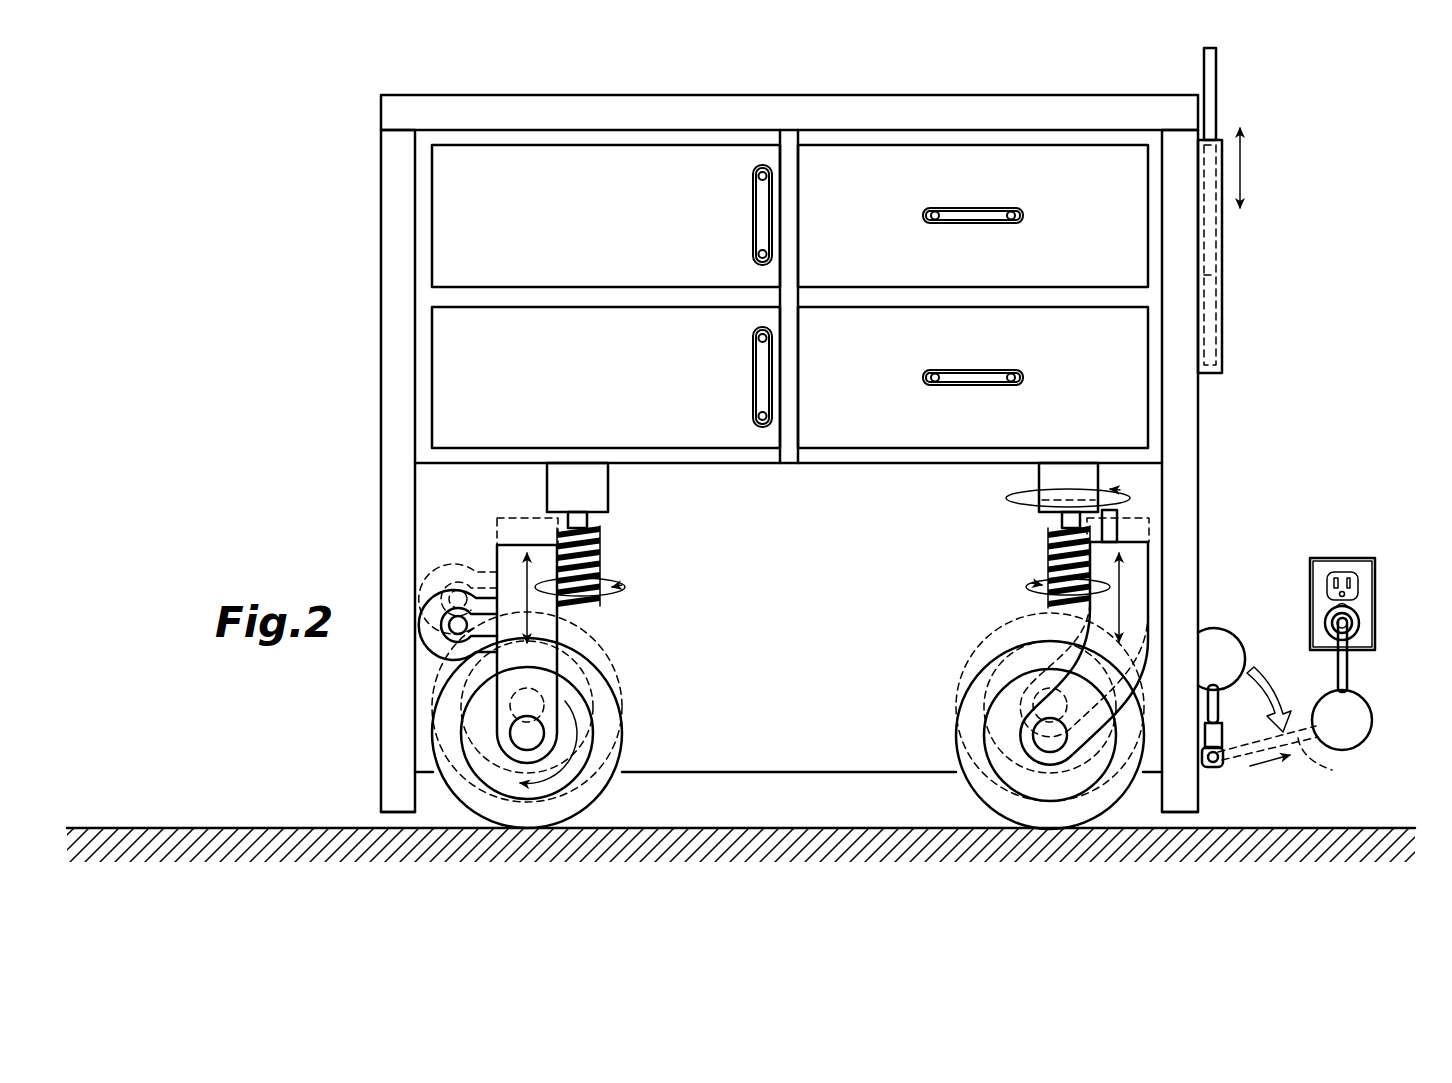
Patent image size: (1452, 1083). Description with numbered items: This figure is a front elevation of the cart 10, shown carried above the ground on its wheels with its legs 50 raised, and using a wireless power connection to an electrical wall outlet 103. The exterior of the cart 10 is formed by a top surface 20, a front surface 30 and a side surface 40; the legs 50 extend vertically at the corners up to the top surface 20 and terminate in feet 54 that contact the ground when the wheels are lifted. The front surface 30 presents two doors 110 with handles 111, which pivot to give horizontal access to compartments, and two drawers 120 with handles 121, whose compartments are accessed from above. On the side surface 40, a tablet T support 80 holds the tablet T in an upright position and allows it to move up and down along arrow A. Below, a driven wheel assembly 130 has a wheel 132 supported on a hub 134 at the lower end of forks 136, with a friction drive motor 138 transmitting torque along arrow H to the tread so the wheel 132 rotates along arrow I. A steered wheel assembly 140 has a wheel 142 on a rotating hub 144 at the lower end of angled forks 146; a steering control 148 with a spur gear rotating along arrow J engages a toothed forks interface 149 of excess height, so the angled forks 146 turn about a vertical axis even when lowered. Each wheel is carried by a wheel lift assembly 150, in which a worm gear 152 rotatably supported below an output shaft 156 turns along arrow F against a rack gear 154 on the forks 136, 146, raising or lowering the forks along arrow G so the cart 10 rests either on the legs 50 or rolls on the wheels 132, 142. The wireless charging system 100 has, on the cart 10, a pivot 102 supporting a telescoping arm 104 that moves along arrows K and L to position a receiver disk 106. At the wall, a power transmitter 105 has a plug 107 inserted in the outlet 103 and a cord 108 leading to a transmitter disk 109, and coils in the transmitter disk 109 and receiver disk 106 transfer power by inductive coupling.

The cart 10 is at (346, 250).
The top surface 20 is at (614, 118).
The front surface 30 is at (790, 135).
The side surface 40 is at (1200, 442).
The legs 50 is at (381, 510).
The feet 54 is at (381, 800).
The tablet support 80 is at (1236, 256).
The wireless charging system 100 is at (1282, 585).
The pivot 102 is at (1210, 768).
The wall outlet 103 is at (1340, 558).
The telescoping arm 104 is at (1278, 695).
The power transmitter 105 is at (1365, 665).
The receiver disk 106 is at (1240, 646).
The plug 107 is at (1362, 627).
The cord 108 is at (1347, 678).
The transmitter disk 109 is at (1370, 722).
The doors 110 is at (606, 296).
The handles 111 is at (753, 212).
The drawers 120 is at (973, 296).
The horizontal handle 121 is at (985, 208).
The driven wheel assembly 130 is at (632, 727).
The wheels 132 is at (505, 815).
The hub 134 is at (530, 745).
The forks 136 is at (505, 686).
The drive motor 138 is at (445, 650).
The steered wheel assembly 140 is at (948, 733).
The wheel 142 is at (1076, 815).
The rotating hub 144 is at (1050, 745).
The angled forks 146 is at (1090, 725).
The steering control 148 is at (1063, 500).
The forks interface 149 is at (1110, 527).
The wheel lift assembly 150 is at (688, 565).
The worm gear 152 is at (600, 535).
The rack gear 154 is at (555, 547).
The output shaft 156 is at (608, 475).
The tablet T is at (1212, 90).
The vertical direction A is at (1242, 170).
The arrow F is at (605, 583).
The arrow G is at (497, 575).
The arrow H is at (432, 607).
The arrow I is at (583, 715).
The arrow J is at (1027, 505).
The arrow K is at (1218, 703).
The arrow L is at (1268, 768).